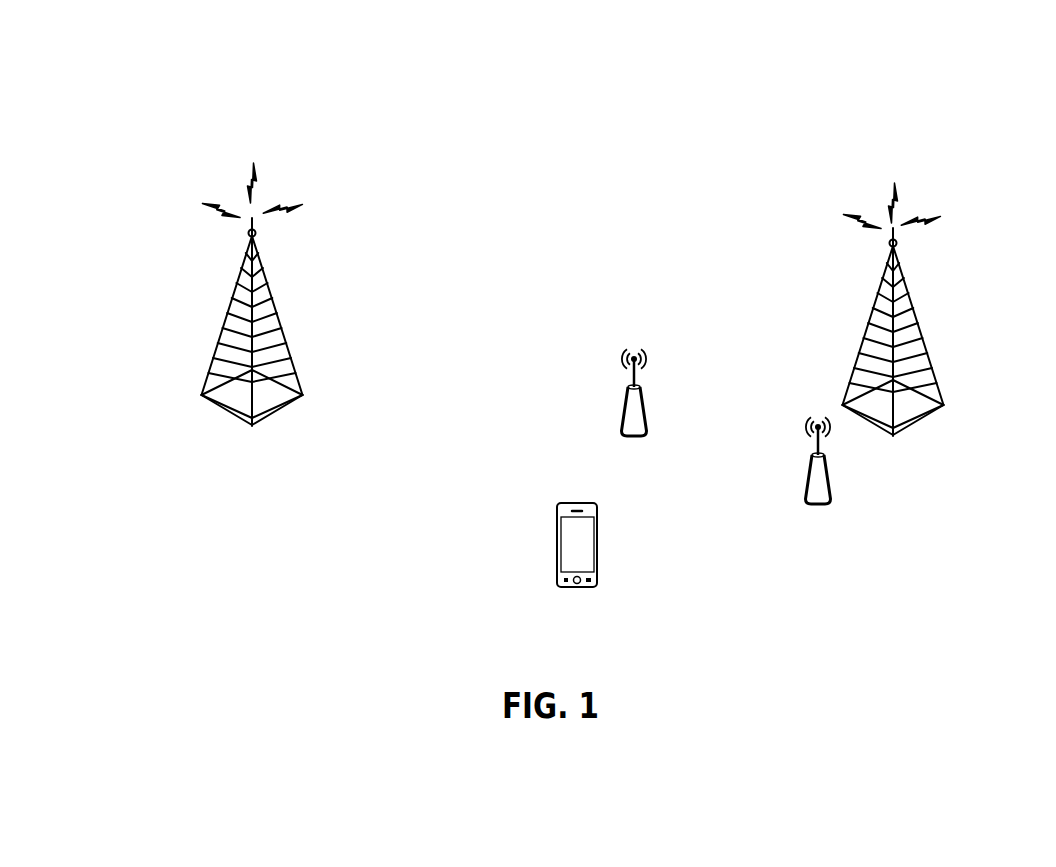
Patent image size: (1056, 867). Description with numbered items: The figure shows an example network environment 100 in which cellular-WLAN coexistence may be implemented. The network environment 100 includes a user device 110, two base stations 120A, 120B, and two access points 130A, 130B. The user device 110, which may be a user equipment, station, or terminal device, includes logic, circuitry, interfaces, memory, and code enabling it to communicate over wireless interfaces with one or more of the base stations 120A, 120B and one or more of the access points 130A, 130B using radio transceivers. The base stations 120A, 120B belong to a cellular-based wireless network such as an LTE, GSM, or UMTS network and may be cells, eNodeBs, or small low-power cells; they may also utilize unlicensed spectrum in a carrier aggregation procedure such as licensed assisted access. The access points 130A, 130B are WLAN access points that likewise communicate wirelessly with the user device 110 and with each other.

The network environment 100 is at (249, 86).
The user device 110 is at (570, 503).
The base station 120A is at (289, 340).
The base station 120B is at (933, 345).
The access point 130A is at (643, 384).
The access point 130B is at (824, 451).